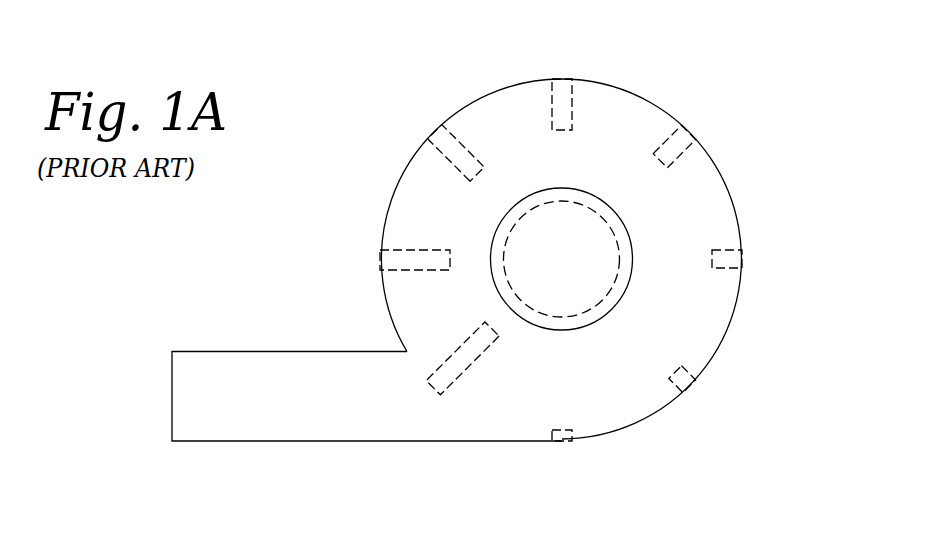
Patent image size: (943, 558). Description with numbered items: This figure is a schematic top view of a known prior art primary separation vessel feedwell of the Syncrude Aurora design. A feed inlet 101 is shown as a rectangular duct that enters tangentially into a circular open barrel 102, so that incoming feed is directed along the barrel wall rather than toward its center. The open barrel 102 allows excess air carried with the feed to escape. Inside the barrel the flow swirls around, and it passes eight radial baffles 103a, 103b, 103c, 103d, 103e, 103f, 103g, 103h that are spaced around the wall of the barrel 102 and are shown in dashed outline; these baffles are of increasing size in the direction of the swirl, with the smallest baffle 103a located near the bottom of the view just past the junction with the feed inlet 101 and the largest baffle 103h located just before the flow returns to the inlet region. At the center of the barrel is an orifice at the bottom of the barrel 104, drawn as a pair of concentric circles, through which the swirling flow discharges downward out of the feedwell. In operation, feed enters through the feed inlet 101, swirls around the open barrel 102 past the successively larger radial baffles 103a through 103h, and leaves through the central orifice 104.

The feed inlet 101 is at (213, 351).
The open barrel 102 is at (732, 196).
The radial baffle 103a is at (565, 443).
The radial baffle 103b is at (688, 385).
The radial baffle 103c is at (738, 261).
The radial baffle 103d is at (690, 126).
The radial baffle 103e is at (558, 79).
The radial baffle 103f is at (432, 133).
The radial baffle 103g is at (380, 262).
The radial baffle 103h is at (432, 388).
The orifice at the bottom of the barrel 104 is at (556, 313).